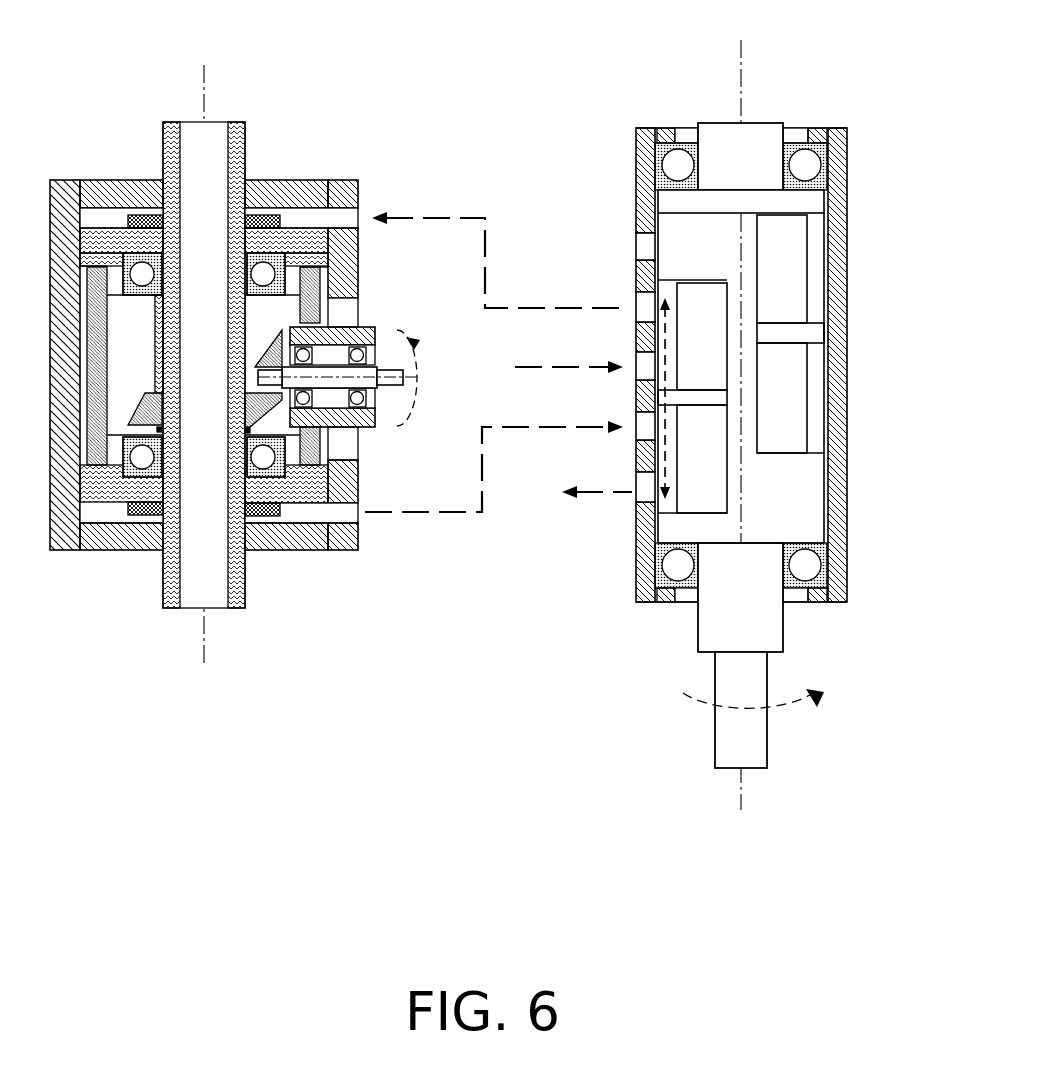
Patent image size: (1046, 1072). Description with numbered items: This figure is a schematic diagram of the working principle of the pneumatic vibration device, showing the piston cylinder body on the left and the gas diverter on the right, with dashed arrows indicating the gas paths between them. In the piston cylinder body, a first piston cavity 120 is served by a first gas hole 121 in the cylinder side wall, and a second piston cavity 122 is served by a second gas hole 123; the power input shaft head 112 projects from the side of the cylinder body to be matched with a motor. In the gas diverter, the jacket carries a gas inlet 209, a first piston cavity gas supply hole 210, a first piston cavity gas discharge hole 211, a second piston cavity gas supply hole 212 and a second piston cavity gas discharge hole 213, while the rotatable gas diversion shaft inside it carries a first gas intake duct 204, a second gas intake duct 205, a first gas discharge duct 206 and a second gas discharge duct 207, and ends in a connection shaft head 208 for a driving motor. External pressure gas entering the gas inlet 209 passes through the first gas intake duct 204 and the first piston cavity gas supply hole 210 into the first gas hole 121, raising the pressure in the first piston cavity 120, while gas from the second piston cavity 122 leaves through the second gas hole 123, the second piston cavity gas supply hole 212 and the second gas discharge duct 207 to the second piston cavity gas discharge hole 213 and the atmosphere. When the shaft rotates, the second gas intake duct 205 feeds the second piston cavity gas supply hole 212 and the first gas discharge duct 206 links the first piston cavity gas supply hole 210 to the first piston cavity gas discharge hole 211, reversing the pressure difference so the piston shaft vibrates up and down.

The power input shaft head 112 is at (383, 380).
The first piston cavity 120 is at (107, 218).
The first gas hole 121 is at (342, 217).
The second piston cavity 122 is at (107, 512).
The second gas hole 123 is at (340, 517).
The first gas intake duct 204 is at (693, 363).
The second gas intake duct 205 is at (780, 392).
The first gas discharge duct 206 is at (790, 245).
The second gas discharge duct 207 is at (710, 492).
The connection shaft head 208 is at (755, 712).
The gas inlet 209 is at (642, 365).
The first piston cavity gas supply hole 210 is at (642, 305).
The first piston cavity gas discharge hole 211 is at (642, 240).
The second piston cavity gas supply hole 212 is at (645, 426).
The second piston cavity gas discharge hole 213 is at (645, 486).